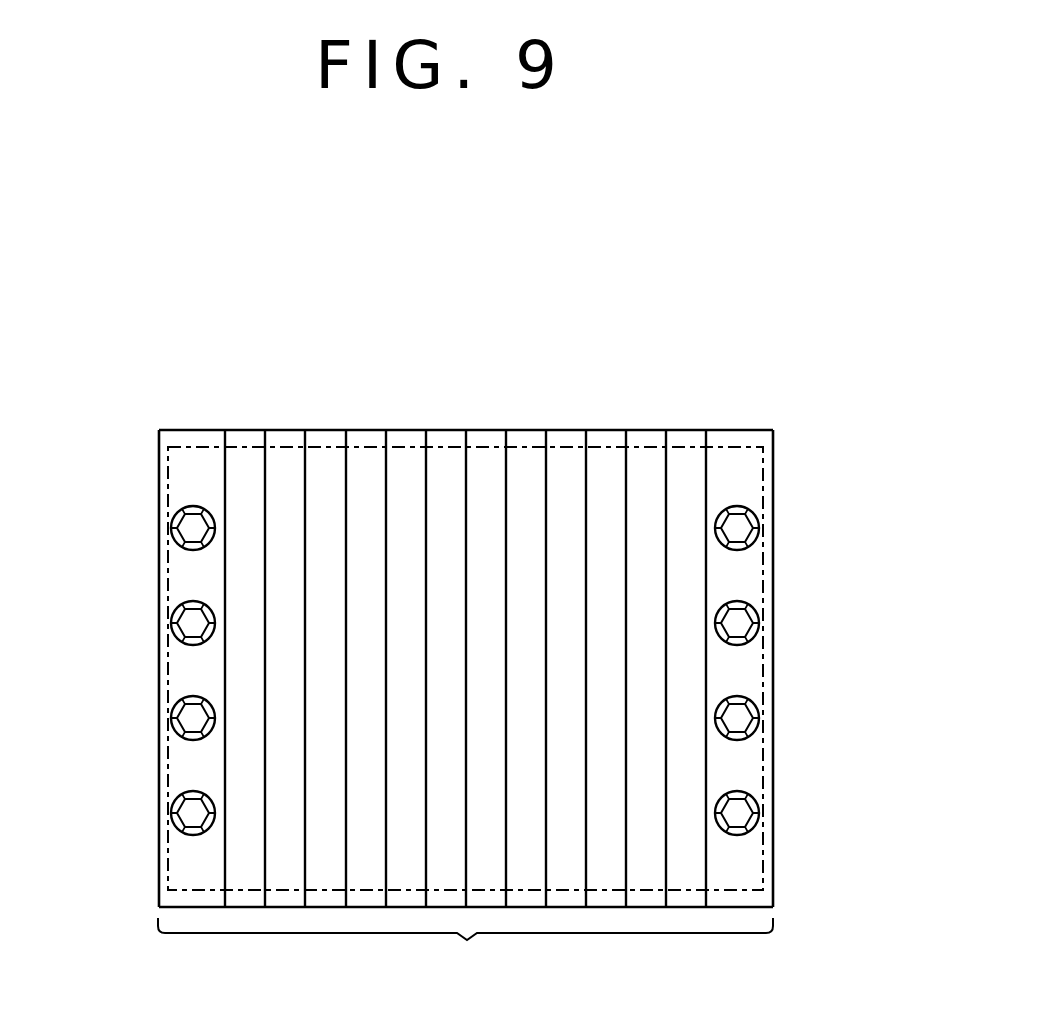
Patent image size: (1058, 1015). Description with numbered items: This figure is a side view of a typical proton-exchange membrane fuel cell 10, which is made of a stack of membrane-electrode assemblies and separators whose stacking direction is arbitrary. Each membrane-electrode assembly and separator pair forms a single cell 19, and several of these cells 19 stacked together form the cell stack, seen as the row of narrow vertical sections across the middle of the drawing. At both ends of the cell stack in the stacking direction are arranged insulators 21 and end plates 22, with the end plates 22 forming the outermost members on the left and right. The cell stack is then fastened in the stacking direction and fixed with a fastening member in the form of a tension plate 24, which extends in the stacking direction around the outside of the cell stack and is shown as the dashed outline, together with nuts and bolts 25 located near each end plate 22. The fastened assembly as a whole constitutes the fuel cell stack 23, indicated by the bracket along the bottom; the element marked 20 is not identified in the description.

The proton-exchange membrane fuel cell 10 is at (777, 810).
The single cell 19 is at (607, 440).
The end cell units 20 is at (287, 440).
The insulator 21 is at (243, 440).
The end plate 22 is at (168, 437).
The fuel cell stack 23 is at (465, 951).
The tension plate 24 is at (192, 442).
The nuts and bolts 25 is at (195, 532).